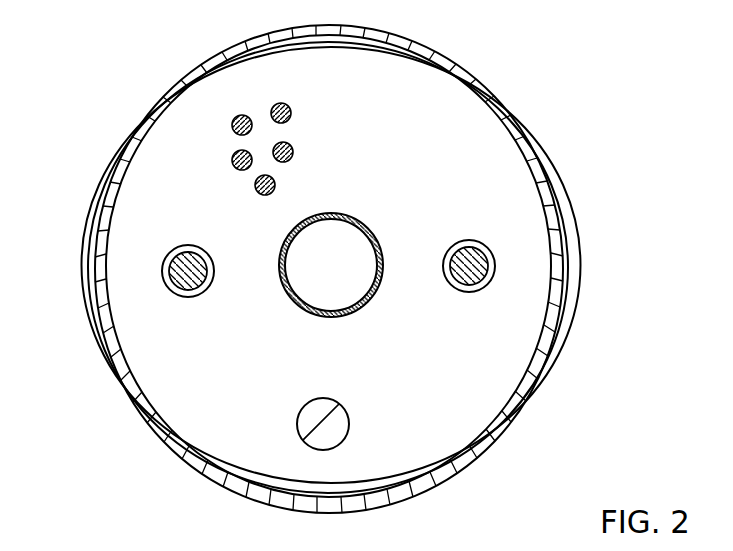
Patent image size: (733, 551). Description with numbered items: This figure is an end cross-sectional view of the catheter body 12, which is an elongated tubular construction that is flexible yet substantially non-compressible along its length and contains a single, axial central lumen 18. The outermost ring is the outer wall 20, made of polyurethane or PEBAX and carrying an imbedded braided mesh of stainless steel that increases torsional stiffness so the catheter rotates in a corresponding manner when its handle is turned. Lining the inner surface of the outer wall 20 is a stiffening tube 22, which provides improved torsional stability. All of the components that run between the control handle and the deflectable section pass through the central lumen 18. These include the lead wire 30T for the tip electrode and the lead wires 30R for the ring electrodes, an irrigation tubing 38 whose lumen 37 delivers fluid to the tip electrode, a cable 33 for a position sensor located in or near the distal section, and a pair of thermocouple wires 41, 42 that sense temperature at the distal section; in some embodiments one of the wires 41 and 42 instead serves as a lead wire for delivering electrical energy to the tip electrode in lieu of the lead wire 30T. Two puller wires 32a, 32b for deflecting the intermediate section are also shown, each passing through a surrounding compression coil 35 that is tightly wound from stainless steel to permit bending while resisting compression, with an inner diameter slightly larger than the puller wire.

The catheter body 12 is at (522, 470).
The central lumen 18 is at (453, 208).
The outer wall 20 is at (465, 58).
The stiffening tube 22 is at (518, 105).
The lead wire 30T is at (232, 160).
The lead wires 30R is at (274, 189).
The puller wire 32a is at (176, 284).
The puller wire 32b is at (494, 262).
The cable 33 is at (299, 412).
The compression coil 35 is at (163, 262).
The lumen 37 is at (351, 277).
The irrigation tubing 38 is at (318, 317).
The thermocouple wire 41 is at (233, 121).
The thermocouple wire 42 is at (273, 107).